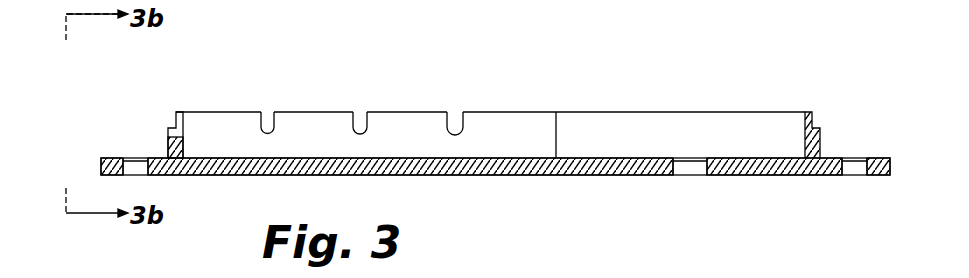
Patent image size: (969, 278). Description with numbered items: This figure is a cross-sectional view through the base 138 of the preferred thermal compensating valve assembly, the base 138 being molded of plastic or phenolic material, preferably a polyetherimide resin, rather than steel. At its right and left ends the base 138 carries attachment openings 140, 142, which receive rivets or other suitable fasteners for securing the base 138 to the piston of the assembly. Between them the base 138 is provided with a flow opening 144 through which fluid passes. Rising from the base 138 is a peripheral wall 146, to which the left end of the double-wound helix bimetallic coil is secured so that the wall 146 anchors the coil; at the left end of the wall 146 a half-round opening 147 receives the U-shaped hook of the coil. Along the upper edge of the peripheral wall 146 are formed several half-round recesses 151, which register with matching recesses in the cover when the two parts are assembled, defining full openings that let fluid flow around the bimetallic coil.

The base 138 is at (648, 176).
The attachment opening 140 is at (137, 159).
The attachment opening 142 is at (855, 159).
The flow opening 144 is at (692, 159).
The peripheral wall 146 is at (172, 152).
The half-round opening 147 is at (180, 138).
The half-round recesses 151 is at (455, 128).